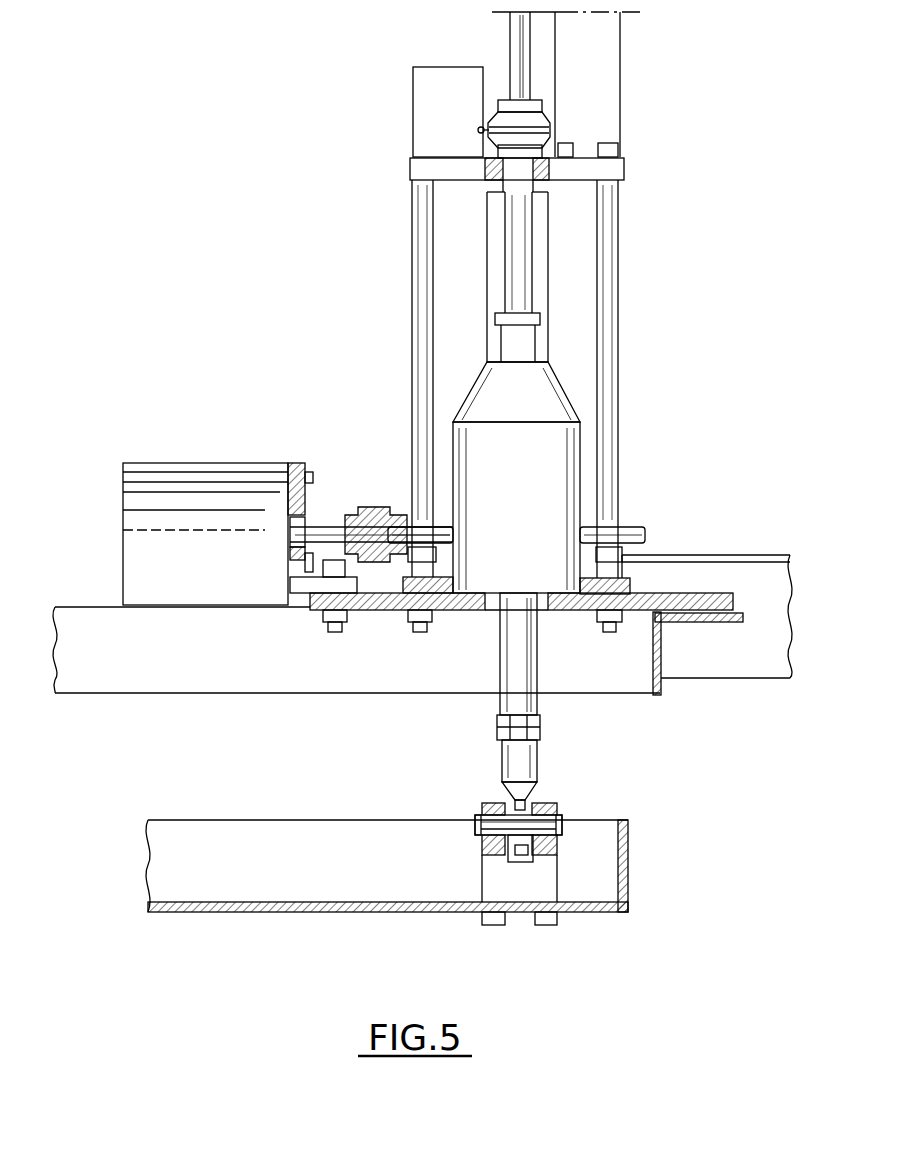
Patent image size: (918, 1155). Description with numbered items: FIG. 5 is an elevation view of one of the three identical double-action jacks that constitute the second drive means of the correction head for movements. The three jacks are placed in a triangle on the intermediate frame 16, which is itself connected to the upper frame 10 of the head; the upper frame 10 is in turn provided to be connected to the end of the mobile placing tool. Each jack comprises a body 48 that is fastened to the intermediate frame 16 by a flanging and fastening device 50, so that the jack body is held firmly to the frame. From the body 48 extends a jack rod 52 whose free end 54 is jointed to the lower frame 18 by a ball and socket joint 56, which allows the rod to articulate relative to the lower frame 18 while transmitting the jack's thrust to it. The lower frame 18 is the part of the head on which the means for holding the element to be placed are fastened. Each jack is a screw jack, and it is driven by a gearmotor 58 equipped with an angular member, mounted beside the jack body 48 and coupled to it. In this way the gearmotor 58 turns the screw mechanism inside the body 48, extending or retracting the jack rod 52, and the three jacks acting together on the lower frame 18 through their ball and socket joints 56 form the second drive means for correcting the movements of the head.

The upper frame 10 is at (724, 556).
The intermediate frame 16 is at (89, 626).
The lower frame 18 is at (325, 908).
The body 48 is at (516, 386).
The flanging and fastening device 50 is at (613, 465).
The jack rod 52 is at (513, 637).
The free end 54 is at (523, 801).
The ball and socket joint 56 is at (572, 811).
The gearmotor 58 is at (221, 487).